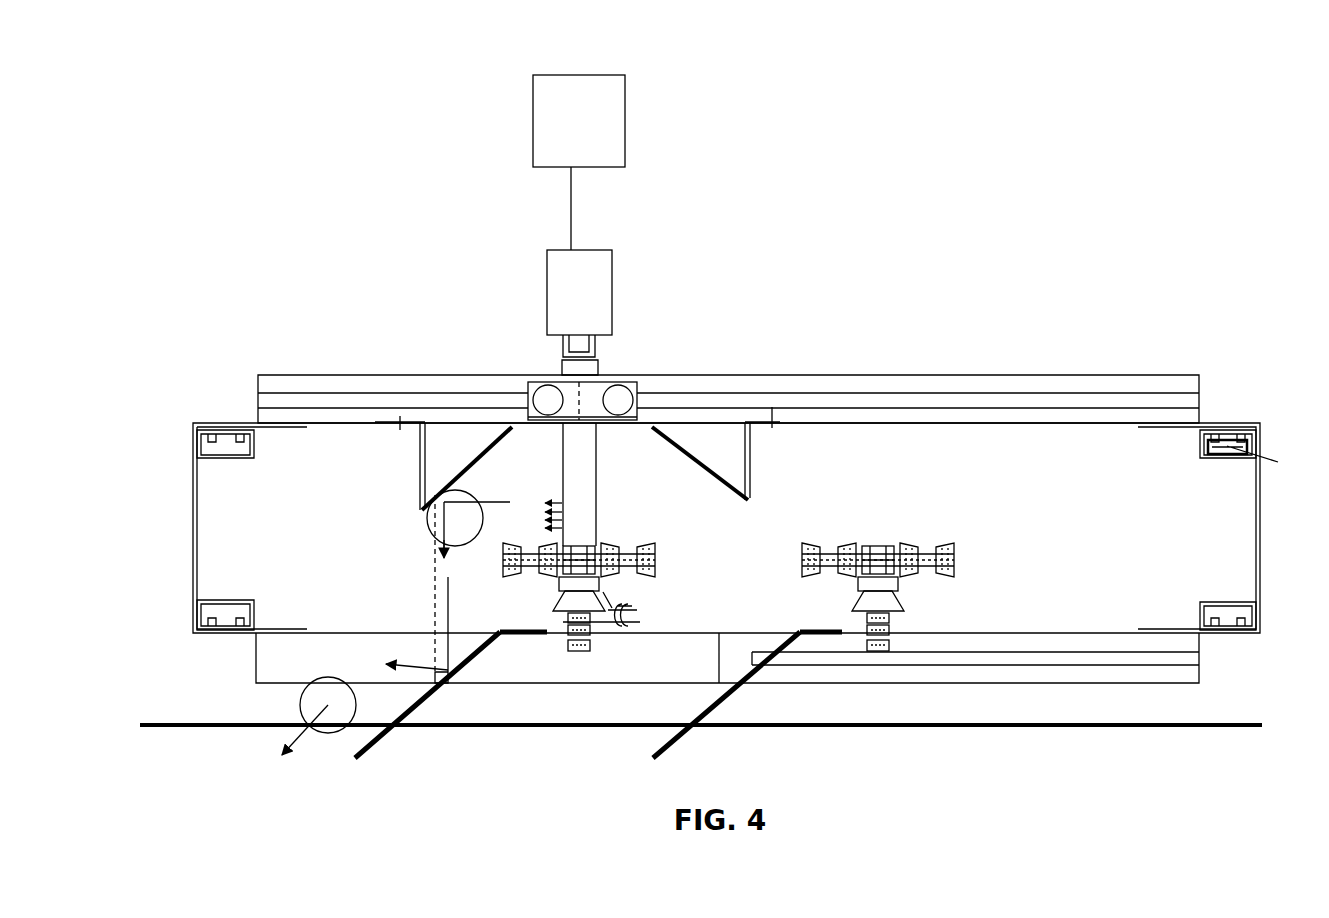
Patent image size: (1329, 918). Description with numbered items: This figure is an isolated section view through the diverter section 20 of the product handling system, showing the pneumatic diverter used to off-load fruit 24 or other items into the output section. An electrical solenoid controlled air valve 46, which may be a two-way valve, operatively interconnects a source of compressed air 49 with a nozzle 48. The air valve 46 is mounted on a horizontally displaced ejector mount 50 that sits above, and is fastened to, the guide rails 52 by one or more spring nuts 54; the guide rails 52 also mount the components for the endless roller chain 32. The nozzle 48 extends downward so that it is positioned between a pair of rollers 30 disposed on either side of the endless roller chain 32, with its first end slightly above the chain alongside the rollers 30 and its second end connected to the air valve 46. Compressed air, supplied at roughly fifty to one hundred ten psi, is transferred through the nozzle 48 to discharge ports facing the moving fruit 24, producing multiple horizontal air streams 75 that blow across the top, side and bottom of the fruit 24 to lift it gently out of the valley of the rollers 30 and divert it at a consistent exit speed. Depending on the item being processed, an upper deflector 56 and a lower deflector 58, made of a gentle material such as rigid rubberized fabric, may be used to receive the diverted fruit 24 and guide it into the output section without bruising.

The diverter section 20 is at (898, 232).
The fruit 24 is at (440, 508).
The rollers 30 is at (925, 553).
The endless roller chain 32 is at (888, 514).
The air valve 46 is at (588, 298).
The nozzle 48 is at (578, 466).
The source of compressed air 49 is at (605, 115).
The ejector mount 50 is at (918, 377).
The guide rails 52 is at (1033, 633).
The spring nuts 54 is at (1225, 440).
The upper deflector 56 is at (700, 467).
The lower deflector 58 is at (377, 742).
The horizontal air streams 75 is at (524, 518).